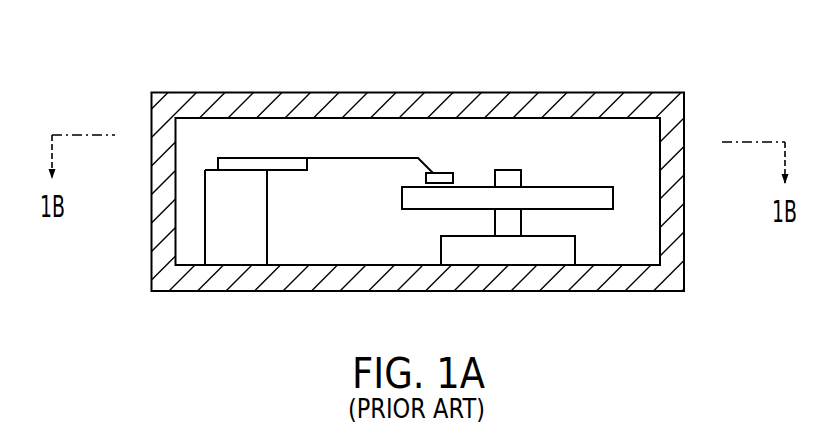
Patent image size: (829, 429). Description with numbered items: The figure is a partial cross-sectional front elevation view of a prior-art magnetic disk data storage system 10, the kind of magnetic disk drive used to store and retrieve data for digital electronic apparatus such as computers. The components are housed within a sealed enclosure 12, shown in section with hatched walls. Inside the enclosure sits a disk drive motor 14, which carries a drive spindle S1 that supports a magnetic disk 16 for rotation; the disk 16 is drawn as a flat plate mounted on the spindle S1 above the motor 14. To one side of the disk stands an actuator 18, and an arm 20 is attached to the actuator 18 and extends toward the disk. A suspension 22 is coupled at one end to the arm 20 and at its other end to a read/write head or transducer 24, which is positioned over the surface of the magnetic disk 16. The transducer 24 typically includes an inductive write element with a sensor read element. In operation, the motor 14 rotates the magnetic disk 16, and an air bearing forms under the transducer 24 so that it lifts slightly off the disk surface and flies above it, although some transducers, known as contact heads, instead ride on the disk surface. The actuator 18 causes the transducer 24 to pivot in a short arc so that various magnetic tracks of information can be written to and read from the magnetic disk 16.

The magnetic disk data storage system 10 is at (490, 68).
The sealed enclosure 12 is at (303, 280).
The disk drive motor 14 is at (565, 257).
The magnetic disk 16 is at (563, 195).
The actuator 18 is at (258, 229).
The arm 20 is at (270, 158).
The suspension 22 is at (347, 162).
The transducer 24 is at (443, 177).
The drive spindle S1 is at (507, 178).